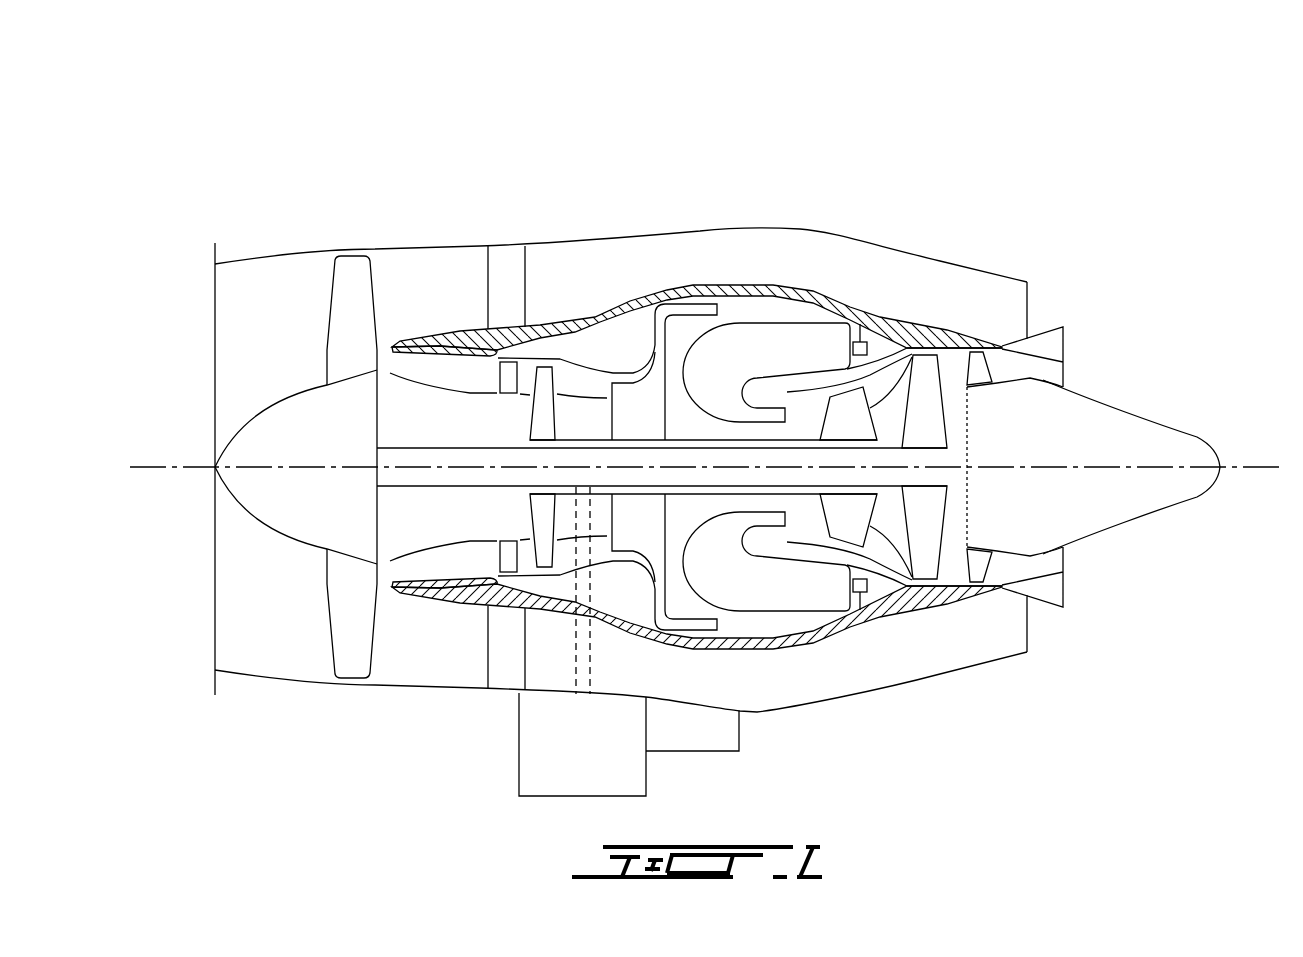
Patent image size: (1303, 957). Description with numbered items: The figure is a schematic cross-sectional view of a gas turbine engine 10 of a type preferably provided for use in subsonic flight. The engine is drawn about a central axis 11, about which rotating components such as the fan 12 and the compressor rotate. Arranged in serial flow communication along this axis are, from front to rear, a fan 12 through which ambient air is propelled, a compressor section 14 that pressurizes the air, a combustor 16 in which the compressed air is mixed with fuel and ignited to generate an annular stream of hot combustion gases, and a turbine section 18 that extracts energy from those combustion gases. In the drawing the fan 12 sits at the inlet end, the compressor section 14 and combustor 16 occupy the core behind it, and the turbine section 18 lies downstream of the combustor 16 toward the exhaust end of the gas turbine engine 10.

The gas turbine engine 10 is at (933, 137).
The central axis 11 is at (162, 468).
The fan 12 is at (347, 605).
The compressor section 14 is at (573, 378).
The combustor 16 is at (762, 348).
The turbine section 18 is at (887, 527).